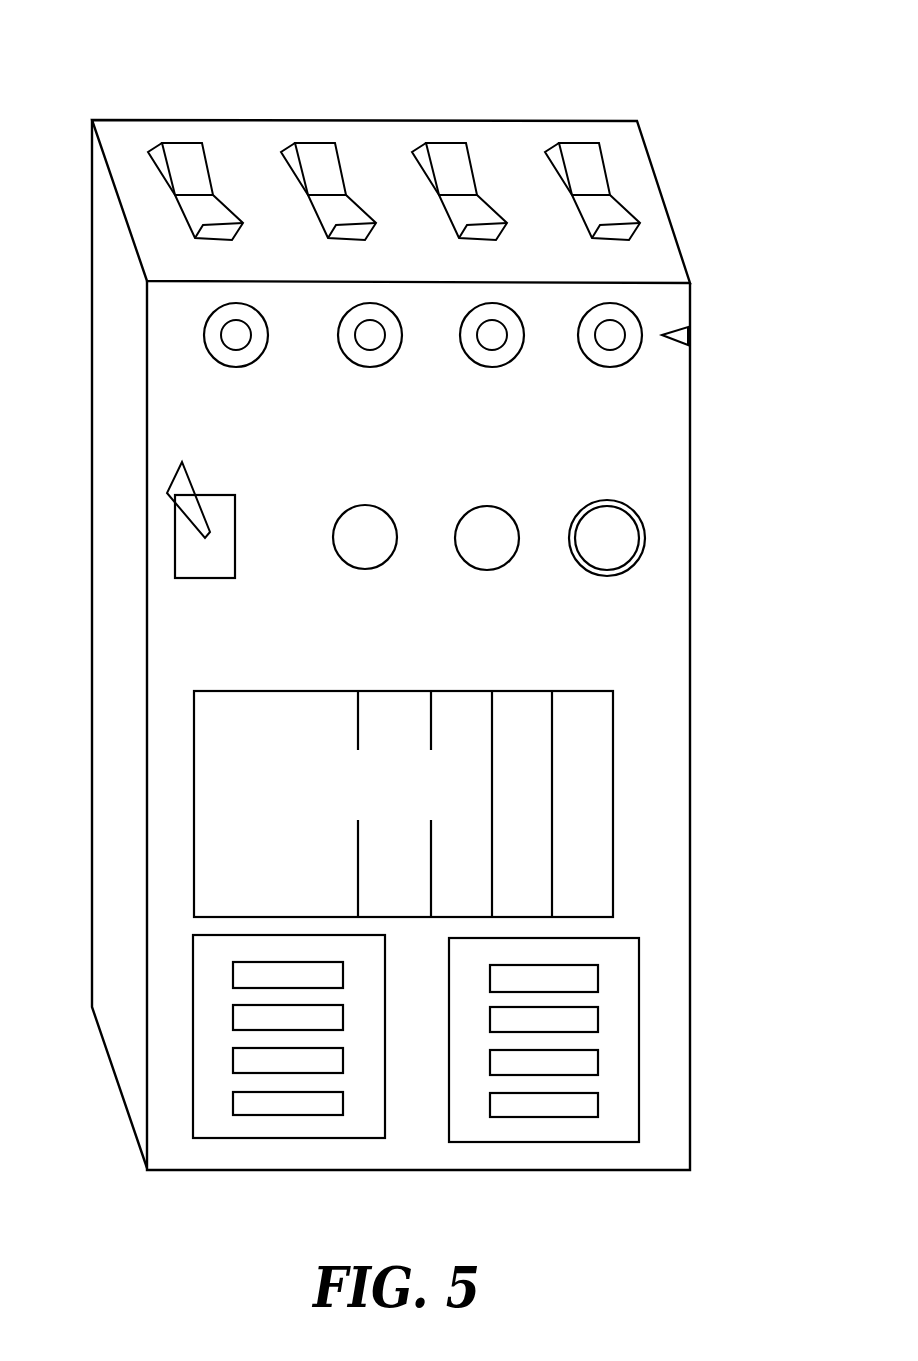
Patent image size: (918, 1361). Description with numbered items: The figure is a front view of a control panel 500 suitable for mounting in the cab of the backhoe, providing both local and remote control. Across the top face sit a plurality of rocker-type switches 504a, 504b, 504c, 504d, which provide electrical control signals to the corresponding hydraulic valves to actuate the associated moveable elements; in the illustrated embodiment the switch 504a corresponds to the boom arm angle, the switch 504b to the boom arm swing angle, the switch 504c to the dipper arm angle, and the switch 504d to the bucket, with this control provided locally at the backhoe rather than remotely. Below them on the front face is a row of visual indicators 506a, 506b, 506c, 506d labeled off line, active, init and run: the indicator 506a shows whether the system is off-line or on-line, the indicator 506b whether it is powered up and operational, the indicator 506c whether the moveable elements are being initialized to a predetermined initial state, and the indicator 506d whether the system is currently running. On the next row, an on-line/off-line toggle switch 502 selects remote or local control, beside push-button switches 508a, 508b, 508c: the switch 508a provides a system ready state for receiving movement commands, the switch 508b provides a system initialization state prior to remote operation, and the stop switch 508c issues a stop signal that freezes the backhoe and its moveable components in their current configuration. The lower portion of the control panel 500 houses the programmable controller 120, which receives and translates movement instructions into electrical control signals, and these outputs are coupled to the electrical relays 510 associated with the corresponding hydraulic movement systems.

The control panel 500 is at (840, 17).
The on-line/off-line switch 502 is at (236, 535).
The switch 504a is at (182, 163).
The switch 504b is at (315, 163).
The switch 504c is at (445, 163).
The switch 504d is at (578, 163).
The visual indicator 506a is at (268, 329).
The visual indicator 506b is at (339, 333).
The visual indicator 506c is at (460, 335).
The visual indicator 506d is at (578, 336).
The switch 508a is at (365, 505).
The switch 508b is at (487, 506).
The stop switch 508c is at (607, 500).
The programmable controller 120 is at (420, 871).
The electrical relays 510 is at (639, 1058).